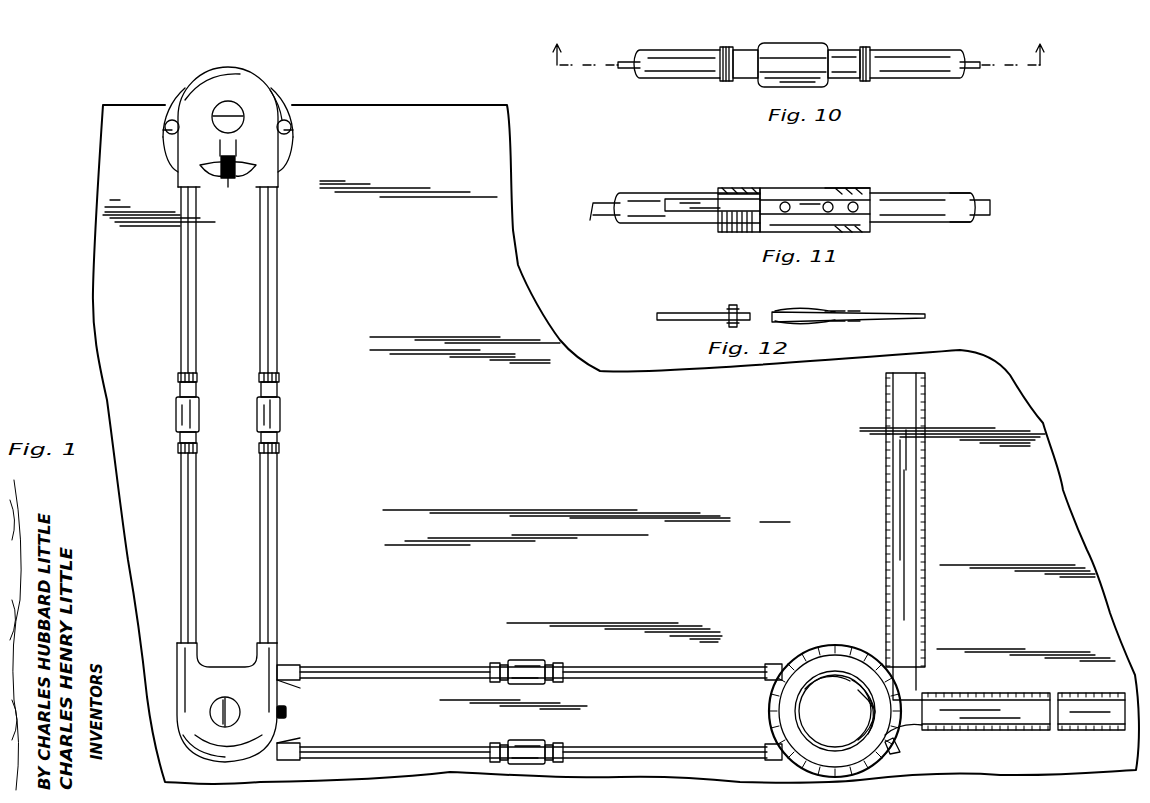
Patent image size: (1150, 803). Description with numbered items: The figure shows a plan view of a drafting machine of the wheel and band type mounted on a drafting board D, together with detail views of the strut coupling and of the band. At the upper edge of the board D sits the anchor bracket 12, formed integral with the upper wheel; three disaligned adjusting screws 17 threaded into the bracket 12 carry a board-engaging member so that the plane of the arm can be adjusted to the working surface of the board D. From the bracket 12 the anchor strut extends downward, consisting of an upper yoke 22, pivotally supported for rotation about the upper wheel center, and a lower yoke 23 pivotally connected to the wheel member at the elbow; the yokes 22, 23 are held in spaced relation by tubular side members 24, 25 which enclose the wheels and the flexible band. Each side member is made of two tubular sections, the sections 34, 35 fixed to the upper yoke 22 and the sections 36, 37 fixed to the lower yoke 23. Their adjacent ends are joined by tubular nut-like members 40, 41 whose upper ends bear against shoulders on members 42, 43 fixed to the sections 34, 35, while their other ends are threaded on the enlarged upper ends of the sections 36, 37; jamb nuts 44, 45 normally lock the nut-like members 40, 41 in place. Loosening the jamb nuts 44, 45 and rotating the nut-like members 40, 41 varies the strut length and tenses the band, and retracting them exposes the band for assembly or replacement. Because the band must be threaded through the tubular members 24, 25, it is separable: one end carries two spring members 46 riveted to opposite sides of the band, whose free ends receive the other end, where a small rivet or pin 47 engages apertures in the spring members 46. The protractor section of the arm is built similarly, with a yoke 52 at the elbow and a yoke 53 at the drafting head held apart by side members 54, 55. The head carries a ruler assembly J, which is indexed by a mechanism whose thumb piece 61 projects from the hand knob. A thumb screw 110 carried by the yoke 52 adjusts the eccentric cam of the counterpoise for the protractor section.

In FIG. 1, the anchor bracket 12 is at (282, 108).
In FIG. 1, the adjusting screws 17 is at (165, 129).
In FIG. 1, the upper yoke 22 is at (215, 82).
In FIG. 1, the lower yoke 23 is at (200, 750).
In FIG. 1, the tubular side member 24 is at (180, 533).
In FIG. 10, the tubular side member 24 is at (908, 50).
In FIG. 11, the tubular side member 24 is at (922, 224).
In FIG. 1, the tubular side member 25 is at (278, 528).
In FIG. 1, the tubular section 34 is at (193, 266).
In FIG. 10, the tubular section 34 is at (935, 75).
In FIG. 11, the tubular section 34 is at (962, 193).
In FIG. 1, the tubular section 35 is at (266, 290).
In FIG. 1, the tubular section 36 is at (189, 600).
In FIG. 10, the tubular section 36 is at (681, 76).
In FIG. 11, the tubular section 36 is at (640, 193).
In FIG. 1, the tubular section 37 is at (266, 608).
In FIG. 1, the tubular nut-like member 40 is at (176, 412).
In FIG. 10, the tubular nut-like member 40 is at (790, 50).
In FIG. 11, the tubular nut-like member 40 is at (805, 189).
In FIG. 1, the tubular nut-like member 41 is at (280, 412).
In FIG. 1, the shouldered member 42 is at (178, 378).
In FIG. 11, the shouldered member 42 is at (872, 189).
In FIG. 1, the shouldered member 43 is at (280, 378).
In FIG. 1, the jamb nut 44 is at (178, 450).
In FIG. 10, the jamb nut 44 is at (728, 82).
In FIG. 11, the jamb nut 44 is at (727, 189).
In FIG. 1, the jamb nut 45 is at (280, 450).
In FIG. 11, the spring members 46 is at (820, 204).
In FIG. 12, the spring members 46 is at (808, 324).
In FIG. 12, the rivet or pin 47 is at (733, 305).
In FIG. 1, the yoke 52 is at (290, 665).
In FIG. 1, the yoke 53 is at (768, 680).
In FIG. 1, the side member 54 is at (400, 673).
In FIG. 1, the side member 55 is at (432, 747).
In FIG. 1, the thumb piece 61 is at (876, 712).
In FIG. 1, the thumb screw 110 is at (287, 711).
In FIG. 1, the drafting board D is at (538, 464).
In FIG. 1, the ruler assembly J is at (925, 625).